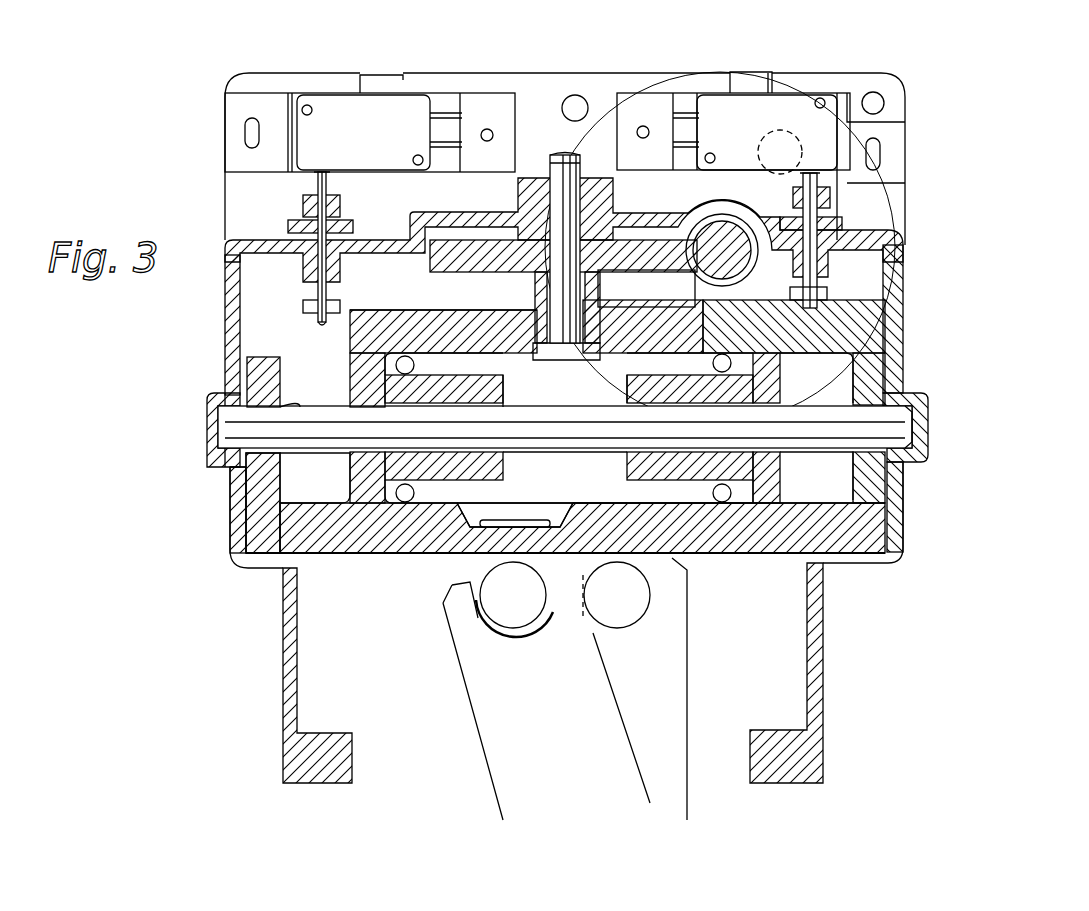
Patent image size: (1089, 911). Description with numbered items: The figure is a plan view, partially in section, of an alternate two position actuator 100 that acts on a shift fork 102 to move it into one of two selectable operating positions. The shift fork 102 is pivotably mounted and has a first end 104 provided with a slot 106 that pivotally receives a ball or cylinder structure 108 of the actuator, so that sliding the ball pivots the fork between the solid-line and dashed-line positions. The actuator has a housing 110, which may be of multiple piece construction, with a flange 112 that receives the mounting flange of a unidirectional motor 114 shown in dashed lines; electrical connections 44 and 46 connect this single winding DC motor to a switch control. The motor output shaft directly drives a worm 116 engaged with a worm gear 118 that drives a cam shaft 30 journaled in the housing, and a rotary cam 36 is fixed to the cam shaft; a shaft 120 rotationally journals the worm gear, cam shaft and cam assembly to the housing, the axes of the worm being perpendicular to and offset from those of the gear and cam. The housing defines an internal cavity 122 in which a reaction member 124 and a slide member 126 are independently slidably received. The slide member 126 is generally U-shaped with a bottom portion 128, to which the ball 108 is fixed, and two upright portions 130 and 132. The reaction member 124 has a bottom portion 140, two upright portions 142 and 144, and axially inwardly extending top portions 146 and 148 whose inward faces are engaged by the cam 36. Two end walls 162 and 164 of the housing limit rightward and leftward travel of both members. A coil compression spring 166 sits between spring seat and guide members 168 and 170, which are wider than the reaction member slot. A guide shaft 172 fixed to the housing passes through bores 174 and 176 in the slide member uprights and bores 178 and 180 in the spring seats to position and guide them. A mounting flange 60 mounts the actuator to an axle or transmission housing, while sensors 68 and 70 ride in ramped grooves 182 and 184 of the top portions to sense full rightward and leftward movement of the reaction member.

The cam shaft 30 is at (586, 285).
The rotary cam 36 is at (641, 322).
The electrical connection 44 is at (790, 73).
The electrical connection 46 is at (830, 90).
The mounting flange 60 is at (808, 760).
The sensor 68 is at (824, 294).
The sensor 70 is at (305, 306).
The two position actuator 100 is at (966, 163).
The shift fork 102 is at (490, 738).
The first end 104 is at (465, 618).
The slot 106 is at (520, 645).
The ball or cylinder structure 108 is at (527, 610).
The housing 110 is at (226, 357).
The flange 112 is at (617, 95).
The unidirectional motor 114 is at (683, 73).
The worm 116 is at (729, 242).
The worm gear 118 is at (633, 253).
The shaft 120 is at (562, 284).
The internal cavity 122 is at (295, 465).
The reaction member 124 is at (855, 520).
The slide member 126 is at (740, 535).
The bottom portion 128 is at (703, 545).
The upright portion 130 is at (262, 369).
The upright portion 132 is at (772, 382).
The bottom portion 140 is at (802, 556).
The upright portion 142 is at (870, 376).
The upright portion 144 is at (357, 356).
The top portion 146 is at (470, 326).
The top portion 148 is at (749, 314).
The end wall 162 is at (896, 486).
The end wall 164 is at (255, 490).
The coil compression spring 166 is at (640, 497).
The spring seat and guide member 168 is at (736, 468).
The spring seat and guide member 170 is at (496, 478).
The guide shaft 172 is at (898, 418).
The bore 174 is at (330, 398).
The bore 176 is at (780, 412).
The bore 178 is at (496, 405).
The bore 180 is at (660, 412).
The ramped groove 182 is at (866, 320).
The ramped groove 184 is at (393, 316).